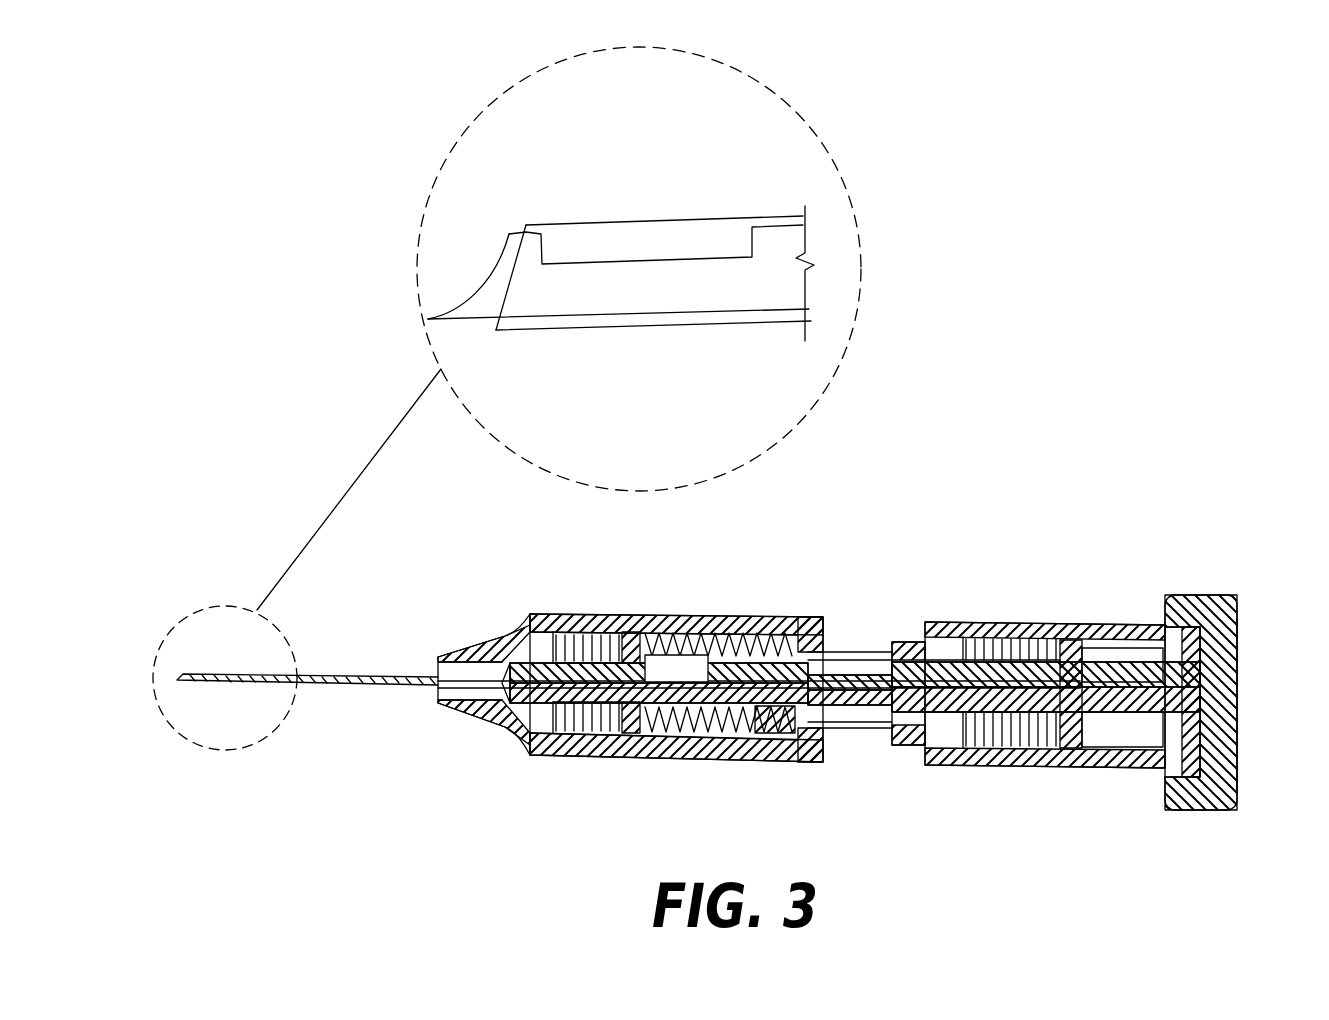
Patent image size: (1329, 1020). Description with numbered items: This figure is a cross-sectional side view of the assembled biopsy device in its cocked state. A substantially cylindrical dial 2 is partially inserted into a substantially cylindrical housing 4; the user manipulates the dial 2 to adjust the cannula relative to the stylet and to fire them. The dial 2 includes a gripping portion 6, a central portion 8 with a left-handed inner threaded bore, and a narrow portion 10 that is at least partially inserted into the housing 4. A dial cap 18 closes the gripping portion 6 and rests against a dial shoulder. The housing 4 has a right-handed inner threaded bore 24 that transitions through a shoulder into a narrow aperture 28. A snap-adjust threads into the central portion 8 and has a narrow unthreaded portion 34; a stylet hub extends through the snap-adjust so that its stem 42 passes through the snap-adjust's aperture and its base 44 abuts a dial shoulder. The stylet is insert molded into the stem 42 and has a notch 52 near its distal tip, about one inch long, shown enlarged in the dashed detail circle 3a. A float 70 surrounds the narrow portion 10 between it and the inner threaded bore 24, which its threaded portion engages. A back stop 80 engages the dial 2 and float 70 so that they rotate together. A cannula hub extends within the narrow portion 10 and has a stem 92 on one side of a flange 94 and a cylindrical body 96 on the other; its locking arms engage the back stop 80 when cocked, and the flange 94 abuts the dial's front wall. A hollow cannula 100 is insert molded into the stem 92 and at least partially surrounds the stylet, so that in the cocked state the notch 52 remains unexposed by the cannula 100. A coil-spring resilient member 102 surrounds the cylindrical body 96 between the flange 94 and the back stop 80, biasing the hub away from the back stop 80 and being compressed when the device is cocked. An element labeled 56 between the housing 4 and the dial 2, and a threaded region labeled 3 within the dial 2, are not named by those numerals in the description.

The dial 2 is at (1089, 593).
The threaded rod 3 is at (1067, 760).
The detail region 3a is at (247, 747).
The housing 4 is at (682, 596).
The gripping portion 6 is at (1188, 597).
The central portion 8 is at (1037, 623).
The narrow portion 10 is at (735, 638).
The dial cap 18 is at (1235, 702).
The inner threaded bore 24 is at (530, 632).
The narrow aperture 28 is at (452, 693).
The narrow unthreaded portion 34 is at (980, 720).
The stem 42 is at (1107, 697).
The base 44 is at (1187, 760).
The notch 52 is at (640, 245).
The tube 56 is at (877, 723).
The float 70 is at (640, 636).
The back stop 80 is at (797, 625).
The stem 92 is at (538, 735).
The flange 94 is at (628, 730).
The cylindrical body 96 is at (700, 735).
The cannula 100 is at (689, 326).
The resilient member 102 is at (770, 740).